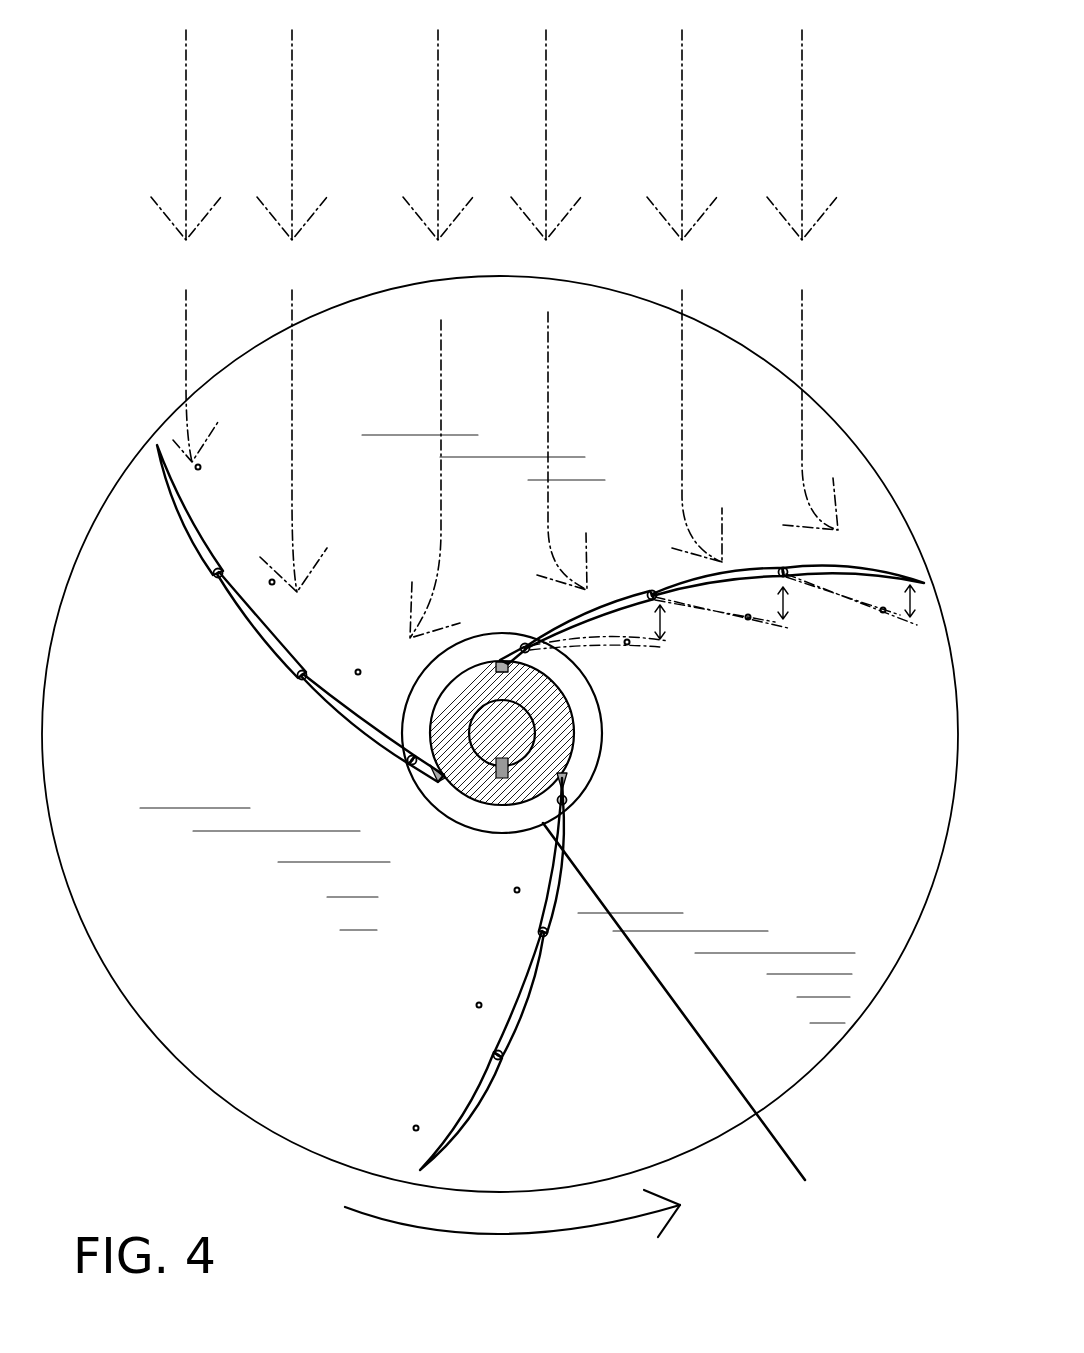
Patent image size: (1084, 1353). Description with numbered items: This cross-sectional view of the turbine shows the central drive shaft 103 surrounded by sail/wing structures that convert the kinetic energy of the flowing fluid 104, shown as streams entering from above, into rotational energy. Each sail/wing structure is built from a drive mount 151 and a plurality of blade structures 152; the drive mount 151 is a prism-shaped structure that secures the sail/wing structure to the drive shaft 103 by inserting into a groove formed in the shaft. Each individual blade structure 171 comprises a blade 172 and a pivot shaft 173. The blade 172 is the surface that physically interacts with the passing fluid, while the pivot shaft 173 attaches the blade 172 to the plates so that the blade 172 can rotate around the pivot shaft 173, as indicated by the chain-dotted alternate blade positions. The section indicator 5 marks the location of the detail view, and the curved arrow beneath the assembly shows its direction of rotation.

The section line 5 is at (688, 1022).
The drive shaft 103 is at (537, 725).
The flowing fluid 104 is at (802, 328).
The drive mount 151 is at (532, 650).
The plurality of blade structures 152 is at (285, 801).
The individual blade structure 171 is at (534, 807).
The blade 172 is at (567, 880).
The pivot shaft 173 is at (568, 800).